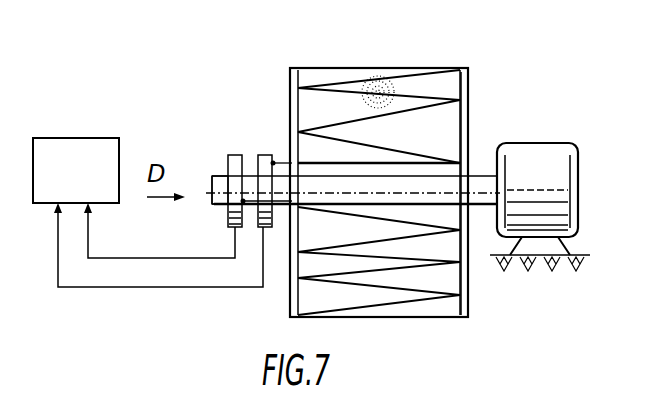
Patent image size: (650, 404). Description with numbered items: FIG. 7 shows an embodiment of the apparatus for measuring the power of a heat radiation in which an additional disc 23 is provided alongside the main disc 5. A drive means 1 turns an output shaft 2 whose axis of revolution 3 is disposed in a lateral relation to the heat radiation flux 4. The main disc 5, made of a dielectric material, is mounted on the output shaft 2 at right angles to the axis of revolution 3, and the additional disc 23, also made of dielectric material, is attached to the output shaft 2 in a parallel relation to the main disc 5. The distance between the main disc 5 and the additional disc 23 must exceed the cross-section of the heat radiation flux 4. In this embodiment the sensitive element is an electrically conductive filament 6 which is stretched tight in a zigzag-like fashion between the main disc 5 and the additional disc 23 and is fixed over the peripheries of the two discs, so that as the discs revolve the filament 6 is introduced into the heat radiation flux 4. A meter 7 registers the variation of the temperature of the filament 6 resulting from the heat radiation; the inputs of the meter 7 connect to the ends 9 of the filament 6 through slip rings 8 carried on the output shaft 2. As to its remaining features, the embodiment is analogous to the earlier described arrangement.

The motor 1 is at (538, 160).
The output shaft 2 is at (225, 203).
The axis of revolution 3 is at (225, 180).
The heat radiation flux 4 is at (378, 72).
The main disc 5 is at (470, 106).
The electrically conductive filament 6 is at (432, 98).
The meter 7 is at (76, 170).
The slip rings 8 is at (262, 232).
The ends 9 is at (246, 198).
The additional disc 23 is at (292, 100).